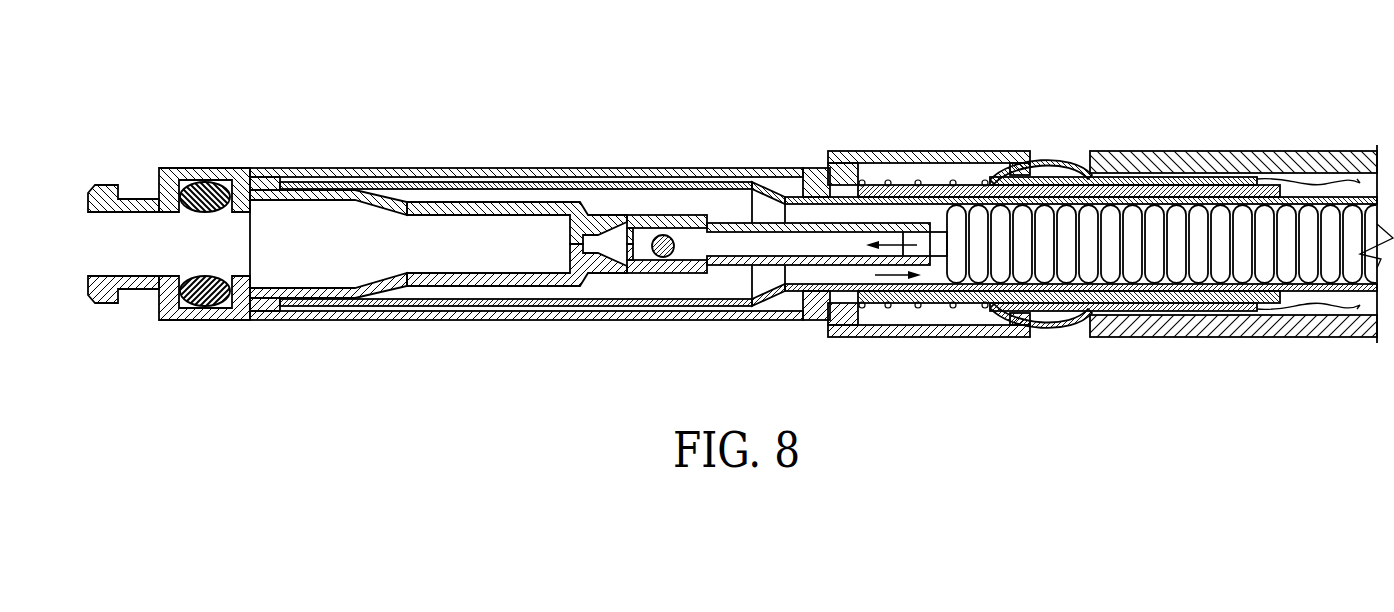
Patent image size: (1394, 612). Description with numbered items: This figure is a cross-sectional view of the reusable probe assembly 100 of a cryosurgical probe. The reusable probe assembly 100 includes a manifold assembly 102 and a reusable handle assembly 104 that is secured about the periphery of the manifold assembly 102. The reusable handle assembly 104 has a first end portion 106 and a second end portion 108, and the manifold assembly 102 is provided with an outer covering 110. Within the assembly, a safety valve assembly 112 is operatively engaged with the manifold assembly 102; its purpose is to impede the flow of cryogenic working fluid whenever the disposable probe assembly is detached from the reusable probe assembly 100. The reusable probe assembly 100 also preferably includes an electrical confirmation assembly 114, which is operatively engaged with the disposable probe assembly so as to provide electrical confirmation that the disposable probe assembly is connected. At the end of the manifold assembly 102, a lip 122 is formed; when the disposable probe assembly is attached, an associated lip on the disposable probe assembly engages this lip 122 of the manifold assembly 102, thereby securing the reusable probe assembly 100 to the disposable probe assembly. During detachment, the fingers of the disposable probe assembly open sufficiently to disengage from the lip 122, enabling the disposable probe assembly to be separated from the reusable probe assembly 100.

The reusable probe assembly 100 is at (740, 229).
The manifold assembly 102 is at (489, 295).
The reusable handle assembly 104 is at (1171, 144).
The first end portion 106 is at (1273, 151).
The second end portion 108 is at (300, 168).
The outer covering 110 is at (386, 182).
The safety valve assembly 112 is at (664, 206).
The electrical confirmation assembly 114 is at (926, 144).
The lip 122 is at (125, 187).